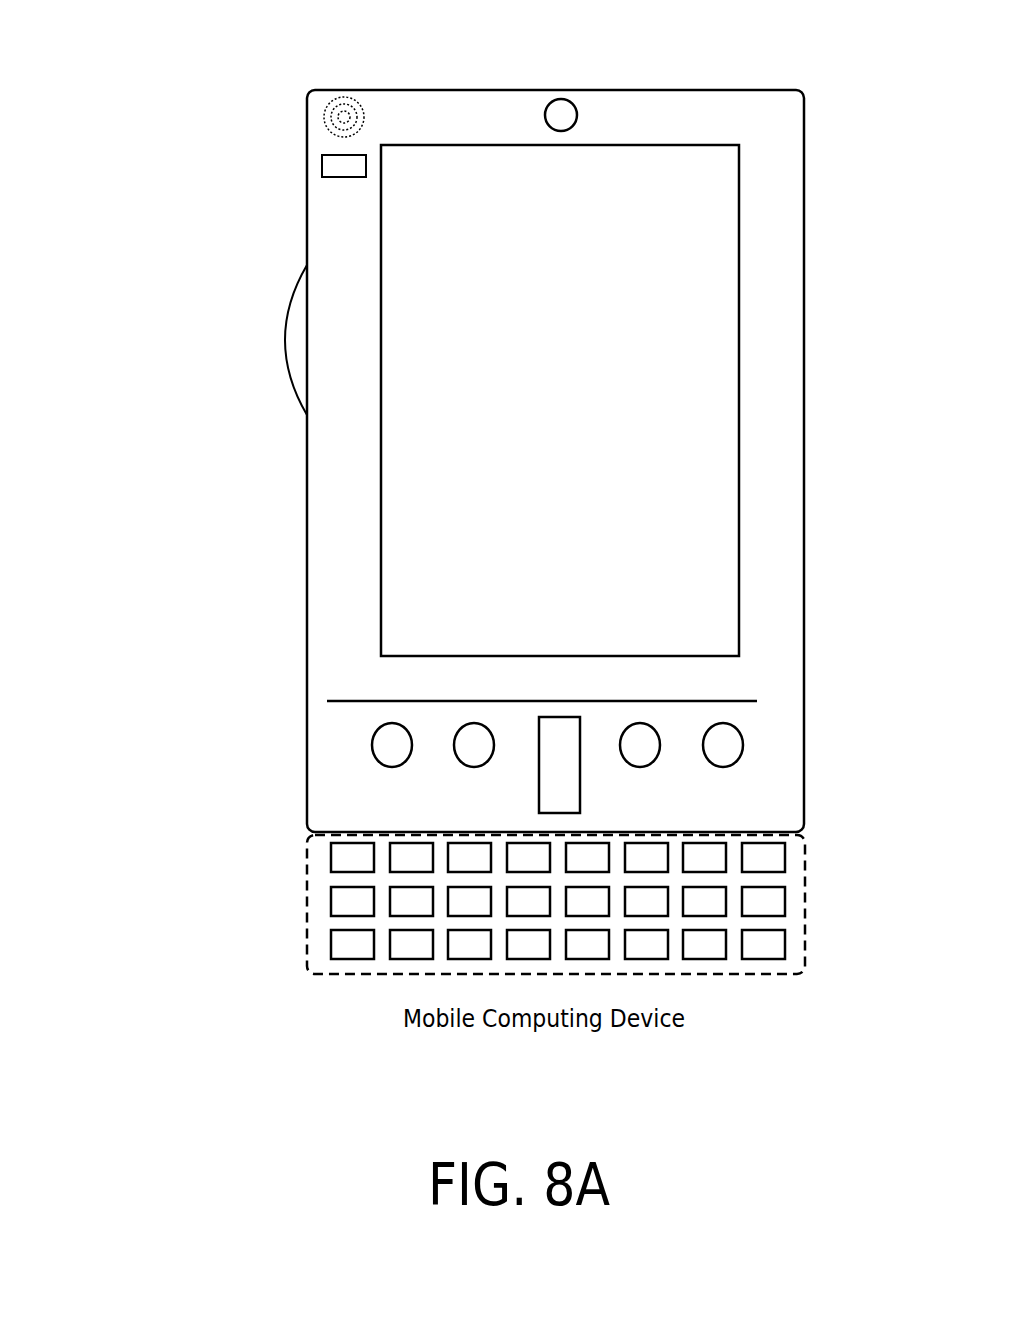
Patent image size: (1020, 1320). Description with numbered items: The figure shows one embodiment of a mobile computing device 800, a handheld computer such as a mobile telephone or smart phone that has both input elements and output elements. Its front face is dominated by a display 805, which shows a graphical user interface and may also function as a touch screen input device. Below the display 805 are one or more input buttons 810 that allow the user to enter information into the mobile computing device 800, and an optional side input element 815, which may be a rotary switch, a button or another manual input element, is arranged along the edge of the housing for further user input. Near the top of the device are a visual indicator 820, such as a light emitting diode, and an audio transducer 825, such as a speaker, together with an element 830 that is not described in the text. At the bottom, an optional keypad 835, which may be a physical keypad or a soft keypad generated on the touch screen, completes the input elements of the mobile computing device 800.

The mobile computing device 800 is at (104, 115).
The display 805 is at (408, 495).
The input buttons 810 is at (539, 773).
The side input element 815 is at (286, 327).
The visual indicator 820 is at (327, 162).
The audio transducer 825 is at (326, 109).
The camera 830 is at (552, 99).
The keypad 835 is at (320, 905).